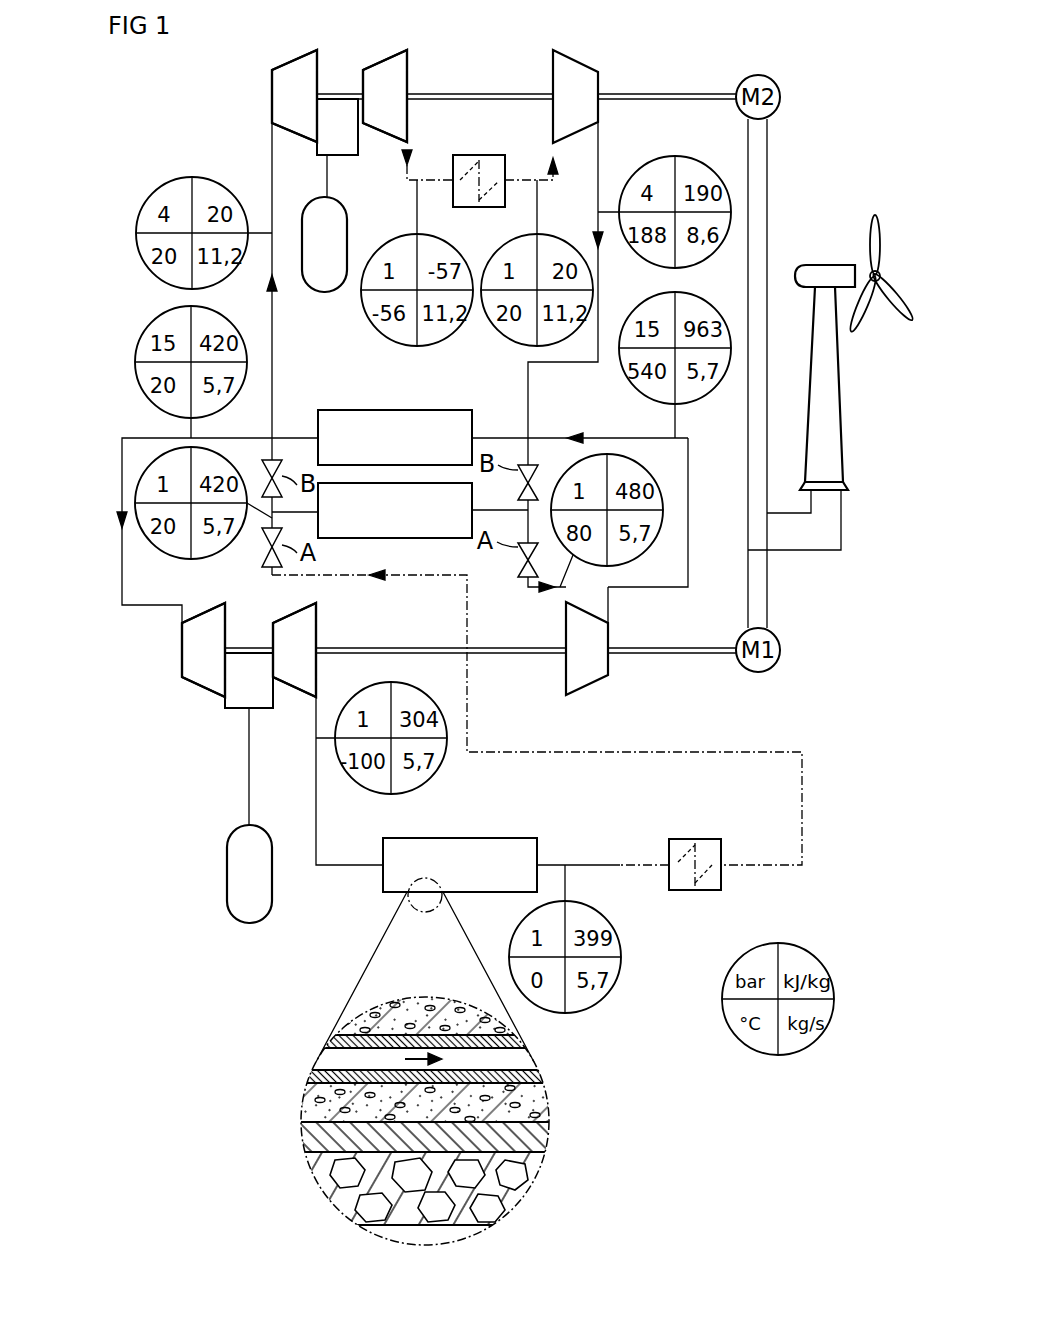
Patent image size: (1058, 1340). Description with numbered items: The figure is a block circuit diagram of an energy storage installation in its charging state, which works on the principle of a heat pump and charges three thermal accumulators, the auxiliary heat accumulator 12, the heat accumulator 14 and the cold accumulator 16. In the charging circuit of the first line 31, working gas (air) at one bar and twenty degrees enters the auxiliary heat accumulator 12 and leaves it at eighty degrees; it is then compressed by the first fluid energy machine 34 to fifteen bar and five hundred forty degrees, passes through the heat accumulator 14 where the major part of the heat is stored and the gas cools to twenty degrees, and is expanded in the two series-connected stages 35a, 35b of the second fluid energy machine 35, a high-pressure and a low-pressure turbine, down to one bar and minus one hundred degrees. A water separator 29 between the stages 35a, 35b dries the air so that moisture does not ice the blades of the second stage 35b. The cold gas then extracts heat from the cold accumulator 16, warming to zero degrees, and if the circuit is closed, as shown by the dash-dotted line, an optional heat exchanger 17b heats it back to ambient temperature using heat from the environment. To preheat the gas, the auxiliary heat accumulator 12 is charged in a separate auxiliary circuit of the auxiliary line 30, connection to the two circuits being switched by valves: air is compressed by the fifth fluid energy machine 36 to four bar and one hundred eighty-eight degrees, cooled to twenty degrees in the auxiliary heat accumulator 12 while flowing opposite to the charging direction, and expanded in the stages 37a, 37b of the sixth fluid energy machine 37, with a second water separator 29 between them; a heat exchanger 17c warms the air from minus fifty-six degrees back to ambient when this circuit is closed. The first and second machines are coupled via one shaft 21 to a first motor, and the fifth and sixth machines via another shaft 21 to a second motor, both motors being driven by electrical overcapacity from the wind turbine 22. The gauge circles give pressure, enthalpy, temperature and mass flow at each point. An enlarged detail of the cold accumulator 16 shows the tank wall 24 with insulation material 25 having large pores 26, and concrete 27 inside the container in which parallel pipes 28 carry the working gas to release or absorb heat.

The auxiliary heat accumulator 12 is at (465, 540).
The heat accumulator 14 is at (431, 410).
The cold accumulator 16 is at (383, 882).
The heat exchanger 17b is at (669, 883).
The heat exchanger 17c is at (476, 155).
The shaft 21 is at (657, 90).
The wind turbine 22 is at (843, 437).
The wall 24 is at (540, 1146).
The insulation material 25 is at (510, 1197).
The pores 26 is at (492, 1207).
The concrete 27 is at (410, 1000).
The pipes 28 is at (553, 1033).
The water separator 29 is at (327, 292).
The auxiliary line 30 is at (358, 155).
The first line 31 is at (122, 573).
The first fluid energy machine 34 is at (588, 692).
The second fluid energy machine 35 is at (316, 600).
The first stage 35a is at (197, 682).
The second stage 35b is at (316, 636).
The fifth fluid energy machine 36 is at (571, 55).
The sixth fluid energy machine 37 is at (407, 47).
The first stage 37a is at (272, 113).
The second stage 37b is at (407, 65).